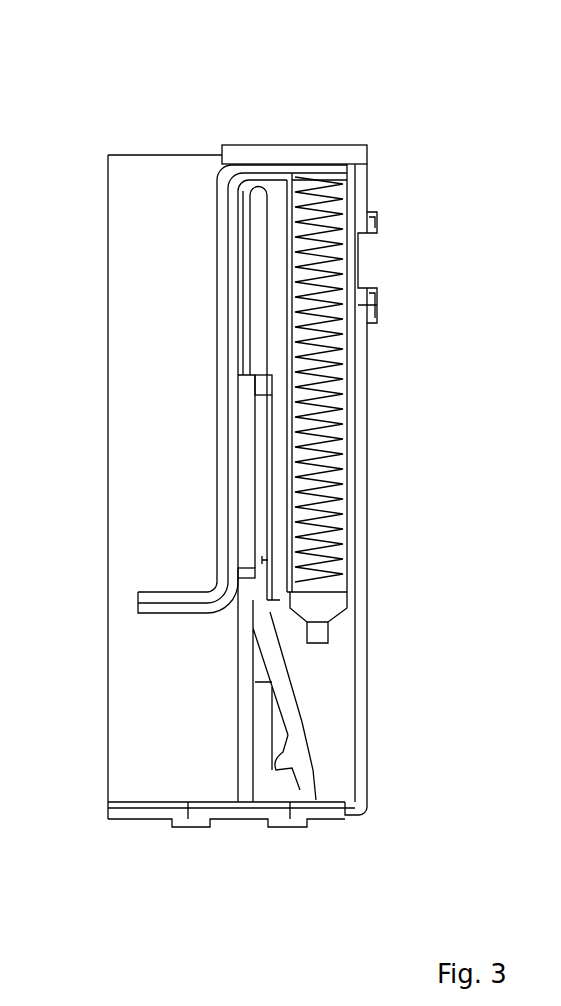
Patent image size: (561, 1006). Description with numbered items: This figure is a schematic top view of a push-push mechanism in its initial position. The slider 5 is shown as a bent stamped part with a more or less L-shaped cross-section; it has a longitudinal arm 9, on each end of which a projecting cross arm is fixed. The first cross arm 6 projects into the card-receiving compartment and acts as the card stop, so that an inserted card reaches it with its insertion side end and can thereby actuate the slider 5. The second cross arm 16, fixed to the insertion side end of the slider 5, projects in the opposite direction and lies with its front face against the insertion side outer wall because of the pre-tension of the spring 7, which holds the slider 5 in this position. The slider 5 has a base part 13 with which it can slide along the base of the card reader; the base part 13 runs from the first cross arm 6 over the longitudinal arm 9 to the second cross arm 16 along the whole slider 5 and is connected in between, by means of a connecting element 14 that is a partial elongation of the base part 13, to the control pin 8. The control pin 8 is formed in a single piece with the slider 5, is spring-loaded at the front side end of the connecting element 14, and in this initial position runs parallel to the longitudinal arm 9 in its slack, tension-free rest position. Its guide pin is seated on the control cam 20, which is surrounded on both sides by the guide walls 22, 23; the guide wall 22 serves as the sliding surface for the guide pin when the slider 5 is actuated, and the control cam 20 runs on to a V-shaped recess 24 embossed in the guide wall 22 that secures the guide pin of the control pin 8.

The longitudinal arm 9 is at (199, 302).
The second cross arm 16 is at (300, 170).
The connecting element 14 is at (258, 294).
The slider 5 is at (225, 368).
The spring 7 is at (333, 435).
The first cross arm 6 is at (170, 585).
The base part 13 is at (183, 615).
The control pin 8 is at (262, 559).
The guide wall 22 is at (275, 687).
The guide wall 23 is at (305, 735).
The control cam 20 is at (300, 742).
The recess 24 is at (280, 770).